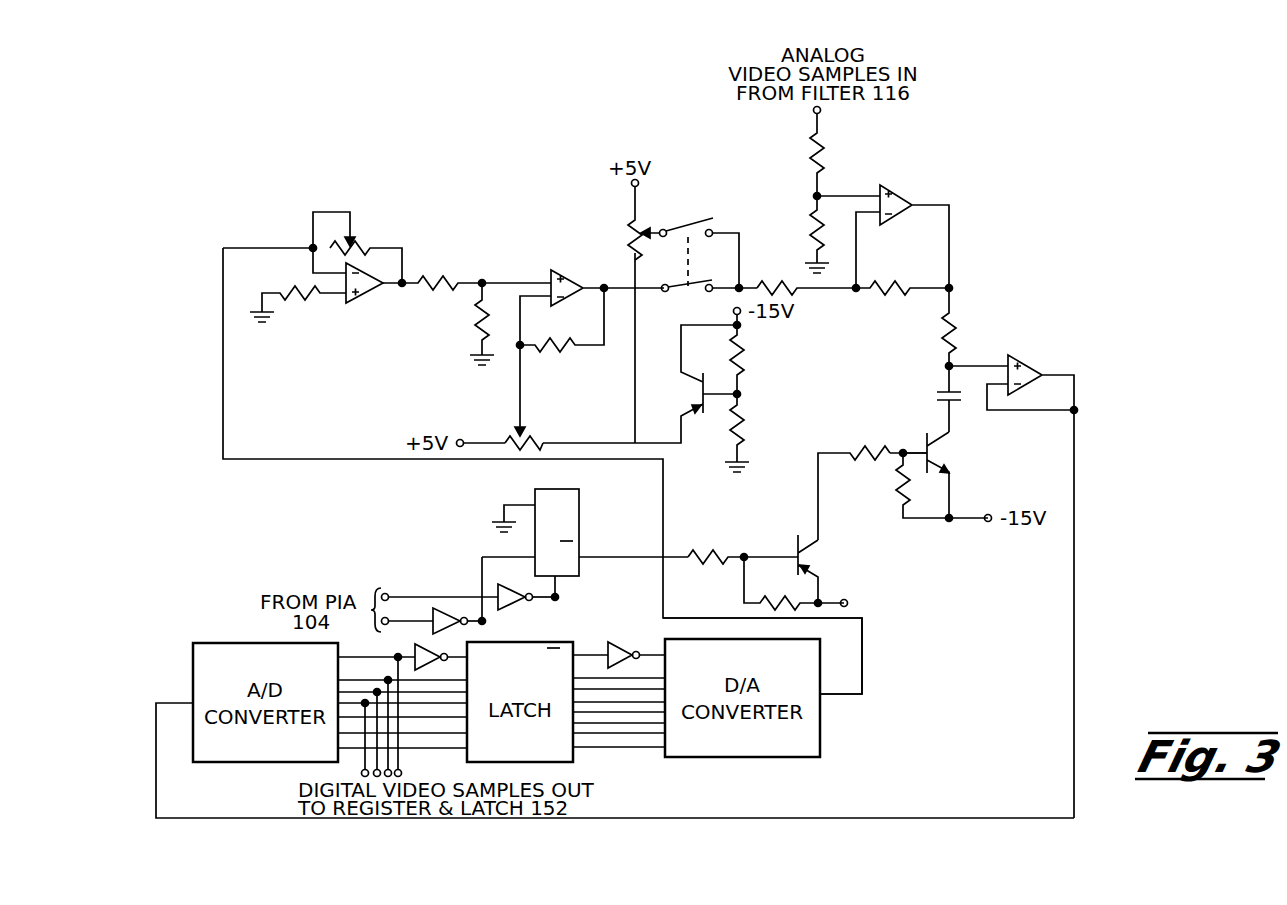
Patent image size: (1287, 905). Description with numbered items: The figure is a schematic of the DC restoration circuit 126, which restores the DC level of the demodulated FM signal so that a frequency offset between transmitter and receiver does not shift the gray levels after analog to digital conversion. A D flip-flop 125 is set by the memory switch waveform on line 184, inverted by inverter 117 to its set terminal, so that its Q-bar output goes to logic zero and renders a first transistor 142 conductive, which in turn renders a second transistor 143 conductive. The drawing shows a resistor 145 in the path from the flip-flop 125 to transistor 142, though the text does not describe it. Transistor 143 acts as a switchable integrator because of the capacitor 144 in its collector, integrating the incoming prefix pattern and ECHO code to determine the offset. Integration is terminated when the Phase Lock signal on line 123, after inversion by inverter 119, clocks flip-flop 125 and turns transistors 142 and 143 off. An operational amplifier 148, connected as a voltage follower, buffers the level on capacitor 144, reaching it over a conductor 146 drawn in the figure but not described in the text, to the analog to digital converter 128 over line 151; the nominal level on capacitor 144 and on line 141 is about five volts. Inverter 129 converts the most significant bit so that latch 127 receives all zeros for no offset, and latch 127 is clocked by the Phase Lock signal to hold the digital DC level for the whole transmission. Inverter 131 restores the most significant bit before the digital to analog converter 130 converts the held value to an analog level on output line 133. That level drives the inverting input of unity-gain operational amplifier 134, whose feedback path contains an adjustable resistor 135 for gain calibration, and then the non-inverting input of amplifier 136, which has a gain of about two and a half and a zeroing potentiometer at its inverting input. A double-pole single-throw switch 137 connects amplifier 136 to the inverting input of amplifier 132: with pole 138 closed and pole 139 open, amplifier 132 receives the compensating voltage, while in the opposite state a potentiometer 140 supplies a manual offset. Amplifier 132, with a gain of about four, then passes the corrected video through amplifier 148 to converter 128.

The DC restoration circuit 126 is at (1000, 212).
The amplifier 132 is at (896, 190).
The operational amplifier 134 is at (368, 293).
The adjustable resistor 135 is at (395, 243).
The amplifier 136 is at (568, 278).
The double-pole single-throw switch 137 is at (691, 258).
The pole of switch 138 is at (698, 290).
The pole of switch 139 is at (698, 223).
The potentiometer 140 is at (630, 238).
The line 141 is at (539, 441).
The first transistor 142 is at (817, 566).
The second transistor 143 is at (942, 451).
The capacitor 144 is at (937, 397).
The resistor 145 is at (721, 553).
The conductor 146 is at (986, 360).
The operational amplifier 148 is at (1034, 372).
The line 151 is at (1074, 570).
The D flip-flop 125 is at (572, 512).
The inverter 117 is at (521, 604).
The inverter 119 is at (456, 629).
The line 123 is at (410, 619).
The line 184 is at (448, 594).
The latch 127 is at (576, 650).
The analog to digital converter 128 is at (212, 654).
The inverter 129 is at (412, 653).
The digital to analog converter 130 is at (819, 750).
The inverter 131 is at (633, 644).
The output line 133 is at (862, 675).